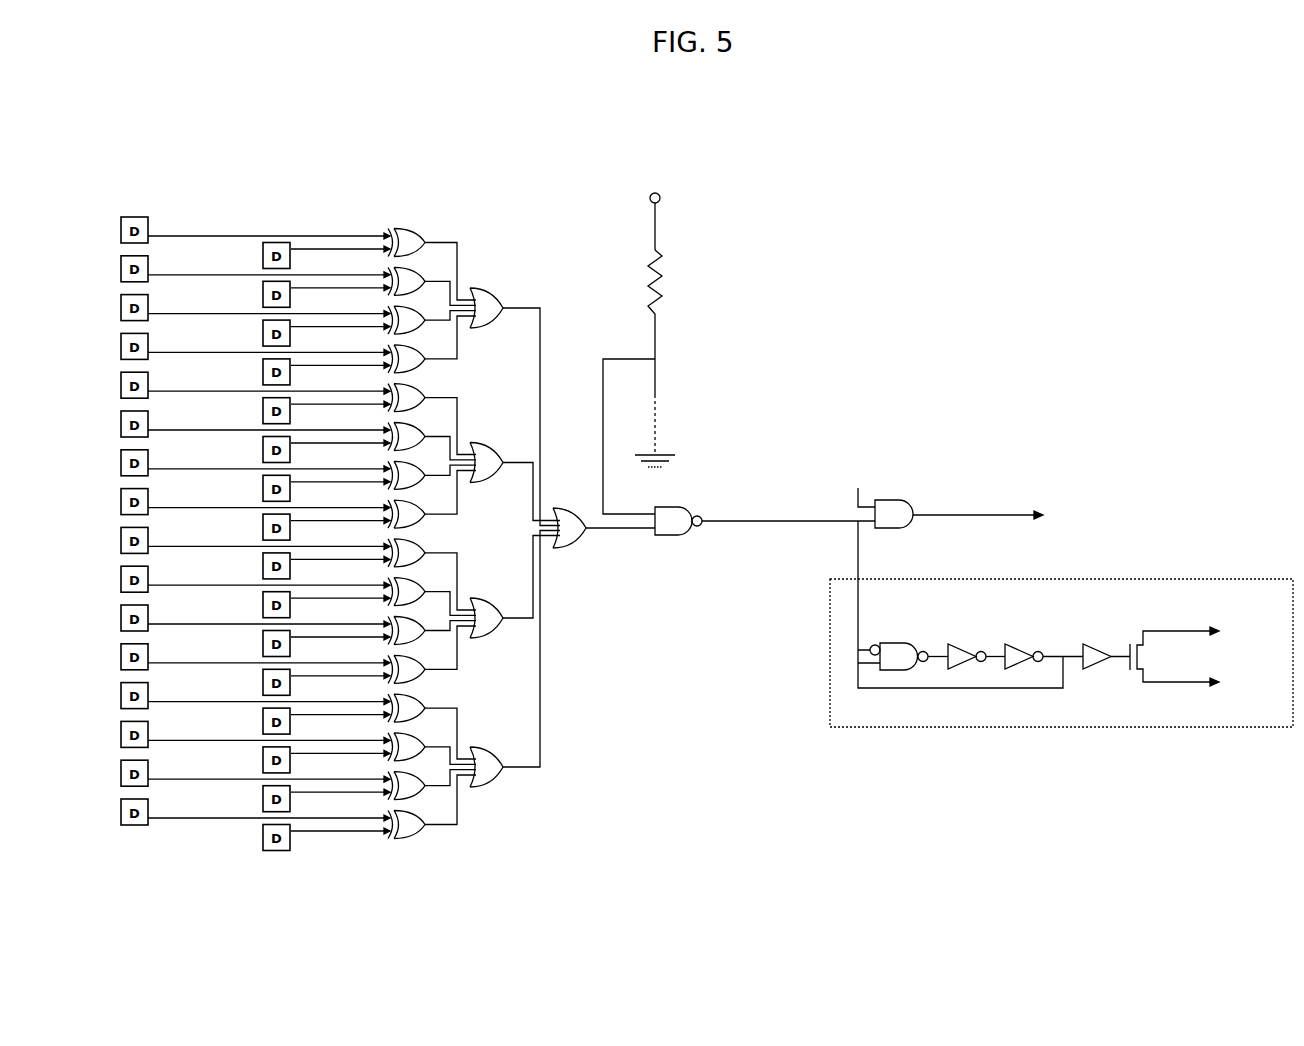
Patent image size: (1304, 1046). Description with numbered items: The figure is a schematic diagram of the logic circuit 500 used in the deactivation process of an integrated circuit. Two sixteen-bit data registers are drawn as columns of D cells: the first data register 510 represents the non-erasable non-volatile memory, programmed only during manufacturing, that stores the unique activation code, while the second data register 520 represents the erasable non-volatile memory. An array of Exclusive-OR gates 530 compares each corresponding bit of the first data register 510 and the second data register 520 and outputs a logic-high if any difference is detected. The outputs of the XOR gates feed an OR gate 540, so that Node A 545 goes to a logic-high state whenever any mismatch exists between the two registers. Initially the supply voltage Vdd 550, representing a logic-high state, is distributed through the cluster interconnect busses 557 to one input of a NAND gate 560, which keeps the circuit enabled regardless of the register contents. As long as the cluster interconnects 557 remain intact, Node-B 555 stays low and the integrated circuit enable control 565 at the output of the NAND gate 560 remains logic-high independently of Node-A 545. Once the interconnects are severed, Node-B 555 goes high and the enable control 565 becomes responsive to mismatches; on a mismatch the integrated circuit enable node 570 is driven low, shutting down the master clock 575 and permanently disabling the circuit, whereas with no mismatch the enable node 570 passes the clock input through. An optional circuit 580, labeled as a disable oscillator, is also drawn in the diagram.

The logic circuit 500 is at (1095, 150).
The first data register 510 is at (137, 476).
The second data register 520 is at (280, 489).
The Exclusive-OR gates 530 is at (410, 835).
The OR gate 540 is at (570, 545).
The Node A 545 is at (622, 556).
The Vdd 550 is at (674, 178).
The Node-B 555 is at (700, 336).
The cluster interconnect busses 557 is at (793, 382).
The NAND gate 560 is at (672, 537).
The integrated circuit enable control 565 is at (768, 565).
The integrated circuit enable node 570 is at (915, 507).
The master clock 575 is at (1030, 548).
The optional circuit 580 is at (900, 728).